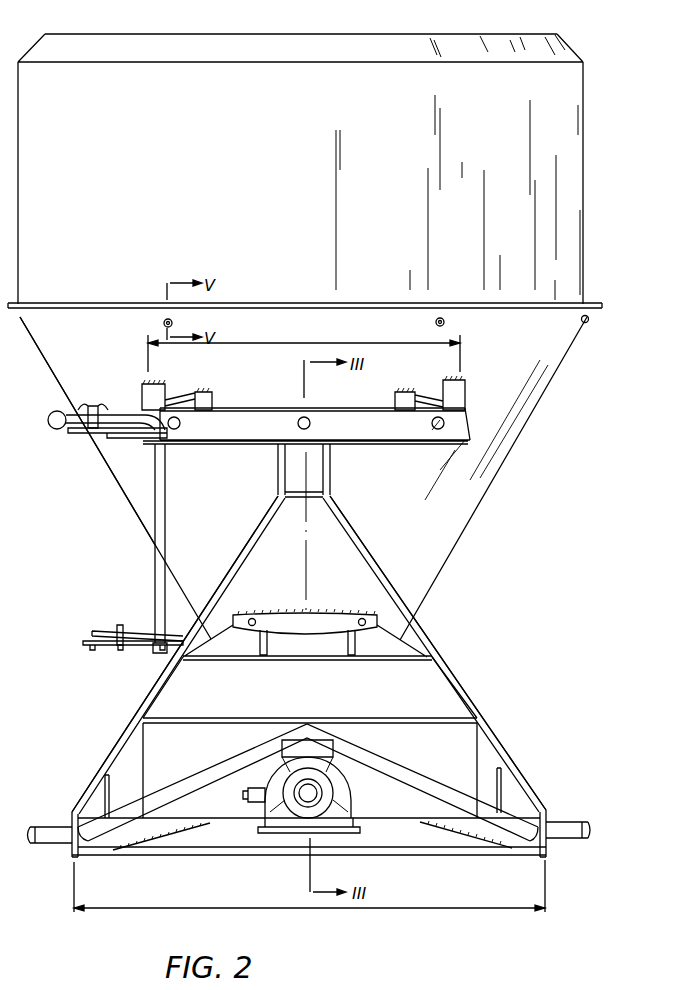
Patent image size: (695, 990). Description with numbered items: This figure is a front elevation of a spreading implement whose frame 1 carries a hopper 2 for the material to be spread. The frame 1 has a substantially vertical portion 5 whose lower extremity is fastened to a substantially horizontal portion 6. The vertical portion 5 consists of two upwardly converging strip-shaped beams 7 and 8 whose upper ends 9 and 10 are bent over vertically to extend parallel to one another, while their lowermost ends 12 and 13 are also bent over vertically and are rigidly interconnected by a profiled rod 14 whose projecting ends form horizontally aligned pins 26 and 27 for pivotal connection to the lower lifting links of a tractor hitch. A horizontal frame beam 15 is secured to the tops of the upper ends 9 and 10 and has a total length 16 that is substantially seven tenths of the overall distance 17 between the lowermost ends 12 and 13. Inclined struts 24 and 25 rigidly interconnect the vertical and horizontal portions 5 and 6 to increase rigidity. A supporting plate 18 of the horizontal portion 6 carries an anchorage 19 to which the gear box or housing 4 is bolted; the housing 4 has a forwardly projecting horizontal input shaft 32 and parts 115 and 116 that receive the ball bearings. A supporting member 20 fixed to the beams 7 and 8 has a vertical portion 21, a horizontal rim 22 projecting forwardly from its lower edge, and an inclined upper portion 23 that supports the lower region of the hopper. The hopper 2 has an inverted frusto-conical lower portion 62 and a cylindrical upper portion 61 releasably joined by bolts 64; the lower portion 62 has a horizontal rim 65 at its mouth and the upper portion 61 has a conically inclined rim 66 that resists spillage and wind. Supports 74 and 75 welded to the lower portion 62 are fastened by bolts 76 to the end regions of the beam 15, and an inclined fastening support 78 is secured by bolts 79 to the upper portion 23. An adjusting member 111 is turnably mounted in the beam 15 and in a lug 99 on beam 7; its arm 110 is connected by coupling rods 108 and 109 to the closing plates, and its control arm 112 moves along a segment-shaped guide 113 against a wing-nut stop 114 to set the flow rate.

The frame 1 is at (375, 536).
The hopper 2 is at (112, 480).
The gear box or housing 4 is at (362, 803).
The substantially vertical portion 5 is at (130, 707).
The substantially horizontal portion 6 is at (130, 866).
The strip-shaped beam 7 is at (232, 568).
The strip-shaped beam 8 is at (450, 668).
The upper end 9 is at (277, 466).
The upper end 10 is at (332, 467).
The lowermost end 12 is at (70, 841).
The lowermost end 13 is at (548, 846).
The profiled rod 14 is at (222, 774).
The horizontal frame beam 15 is at (250, 406).
The total length 16 is at (316, 338).
The overall distance 17 is at (306, 911).
The supporting plate 18 is at (220, 852).
The anchorage 19 is at (268, 846).
The supporting member 20 is at (205, 731).
The vertical portion 21 is at (458, 706).
The horizontal rim 22 is at (354, 716).
The upper portion 23 is at (246, 663).
The inclined strut 24 is at (124, 764).
The inclined strut 25 is at (490, 760).
The pin 26 is at (42, 822).
The pin 27 is at (568, 822).
The input shaft 32 is at (318, 793).
The upper portion 61 is at (575, 125).
The lower portion 62 is at (488, 468).
The bolt 64 is at (436, 322).
The horizontal rim 65 is at (388, 290).
The conically inclined rim 66 is at (394, 40).
The support 74 is at (186, 398).
The support 75 is at (462, 397).
The bolt 76 is at (181, 423).
The inclined fastening support 78 is at (318, 610).
The bolt 79 is at (255, 617).
The lug 99 is at (150, 652).
The coupling rod 108 is at (96, 630).
The coupling rod 109 is at (121, 624).
The arm 110 is at (100, 648).
The adjusting member 111 is at (160, 535).
The control arm 112 is at (125, 410).
The segment-shaped guide 113 is at (78, 436).
The stop 114 is at (92, 403).
The part 115 is at (306, 746).
The part 116 is at (278, 790).